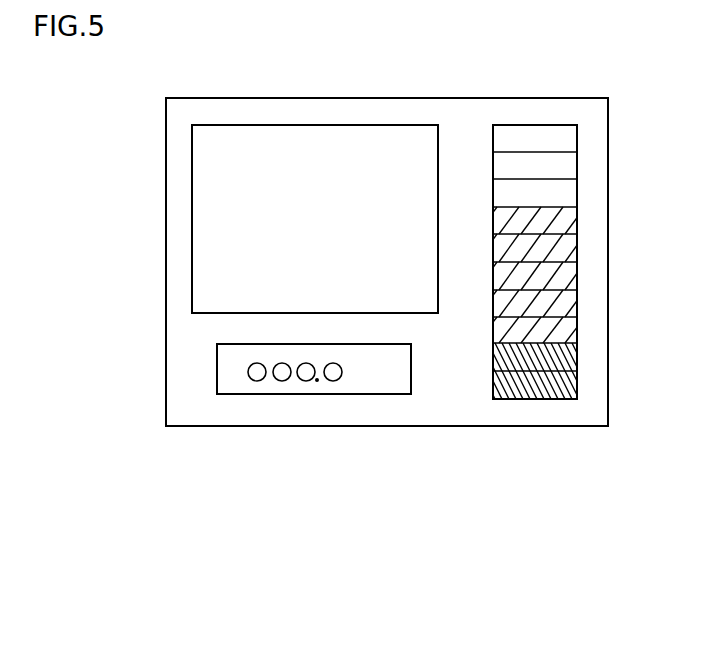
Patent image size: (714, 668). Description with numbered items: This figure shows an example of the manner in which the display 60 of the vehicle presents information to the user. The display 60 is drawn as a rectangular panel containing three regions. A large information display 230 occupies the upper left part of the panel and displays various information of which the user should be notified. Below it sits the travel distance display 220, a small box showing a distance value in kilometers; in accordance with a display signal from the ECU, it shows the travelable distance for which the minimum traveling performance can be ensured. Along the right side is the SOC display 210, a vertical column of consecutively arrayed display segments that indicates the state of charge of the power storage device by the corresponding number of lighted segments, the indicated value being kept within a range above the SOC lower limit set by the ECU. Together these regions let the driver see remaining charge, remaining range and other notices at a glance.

The display 60 is at (166, 262).
The information display 230 is at (283, 125).
The travel distance display 220 is at (322, 394).
The SOC display 210 is at (532, 125).